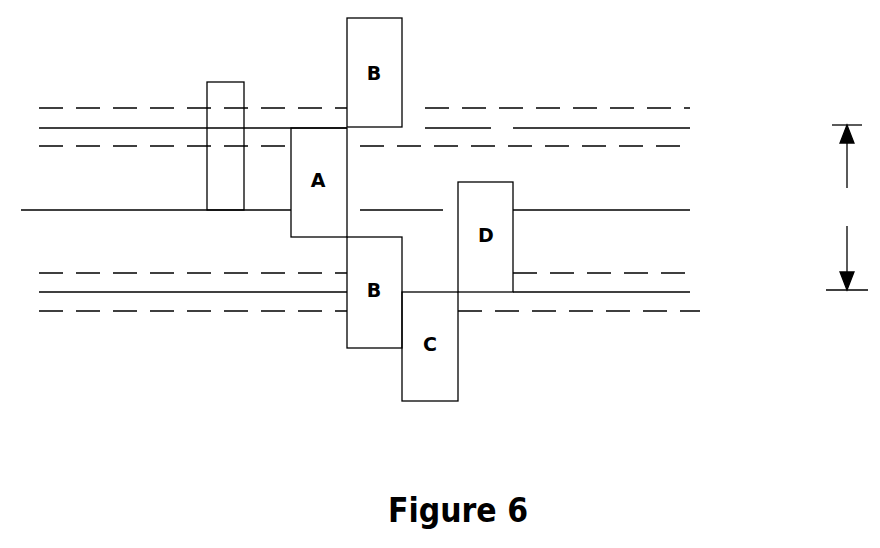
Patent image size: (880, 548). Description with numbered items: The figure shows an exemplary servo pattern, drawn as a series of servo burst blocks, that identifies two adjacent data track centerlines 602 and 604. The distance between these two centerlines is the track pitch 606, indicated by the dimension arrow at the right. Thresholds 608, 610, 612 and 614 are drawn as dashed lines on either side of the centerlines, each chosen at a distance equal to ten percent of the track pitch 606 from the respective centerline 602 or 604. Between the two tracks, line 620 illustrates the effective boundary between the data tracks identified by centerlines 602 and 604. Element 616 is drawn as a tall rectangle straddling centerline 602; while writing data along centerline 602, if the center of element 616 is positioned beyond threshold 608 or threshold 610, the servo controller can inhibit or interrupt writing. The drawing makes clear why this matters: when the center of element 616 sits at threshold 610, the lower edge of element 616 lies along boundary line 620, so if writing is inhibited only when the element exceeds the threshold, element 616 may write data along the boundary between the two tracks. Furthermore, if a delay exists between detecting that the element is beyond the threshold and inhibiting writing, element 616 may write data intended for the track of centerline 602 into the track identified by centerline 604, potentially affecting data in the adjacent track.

The element 616 is at (236, 82).
The threshold 608 is at (690, 108).
The data track centerline 602 is at (690, 128).
The threshold 610 is at (690, 146).
The boundary line 620 is at (690, 210).
The threshold 612 is at (667, 266).
The data track centerline 604 is at (670, 292).
The threshold 614 is at (673, 311).
The track pitch 606 is at (847, 207).